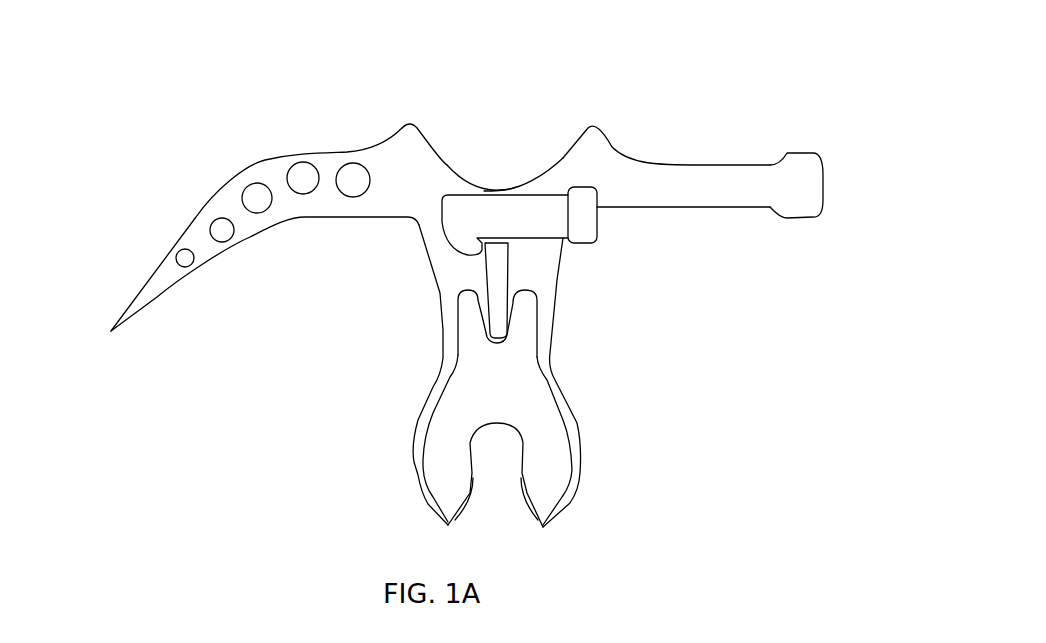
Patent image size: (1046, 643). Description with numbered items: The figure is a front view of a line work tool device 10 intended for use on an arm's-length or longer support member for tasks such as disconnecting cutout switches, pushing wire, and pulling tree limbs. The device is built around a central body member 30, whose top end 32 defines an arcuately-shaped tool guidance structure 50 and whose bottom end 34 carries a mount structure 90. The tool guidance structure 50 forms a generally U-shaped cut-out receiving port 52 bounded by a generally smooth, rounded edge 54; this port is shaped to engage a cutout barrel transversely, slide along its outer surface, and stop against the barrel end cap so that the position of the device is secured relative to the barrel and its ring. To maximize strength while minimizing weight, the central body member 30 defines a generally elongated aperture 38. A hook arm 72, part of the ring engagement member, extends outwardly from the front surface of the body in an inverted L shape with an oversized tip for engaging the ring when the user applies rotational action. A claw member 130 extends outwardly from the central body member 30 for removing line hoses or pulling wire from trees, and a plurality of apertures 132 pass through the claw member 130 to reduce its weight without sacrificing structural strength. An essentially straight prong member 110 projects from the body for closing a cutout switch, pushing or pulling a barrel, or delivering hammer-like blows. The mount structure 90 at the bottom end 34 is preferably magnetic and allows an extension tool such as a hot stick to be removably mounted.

The line work tool device 10 is at (723, 100).
The central body member 30 is at (548, 267).
The top end 32 is at (567, 160).
The bottom end 34 is at (443, 478).
The elongated aperture 38 is at (497, 270).
The tool guidance structure 50 is at (447, 165).
The cut-out receiving port 52 is at (502, 187).
The rounded edge 54 is at (423, 137).
The hook arm 72 is at (557, 217).
The mount structure 90 is at (543, 497).
The prong member 110 is at (807, 202).
The claw member 130 is at (157, 295).
The apertures 132 is at (222, 230).